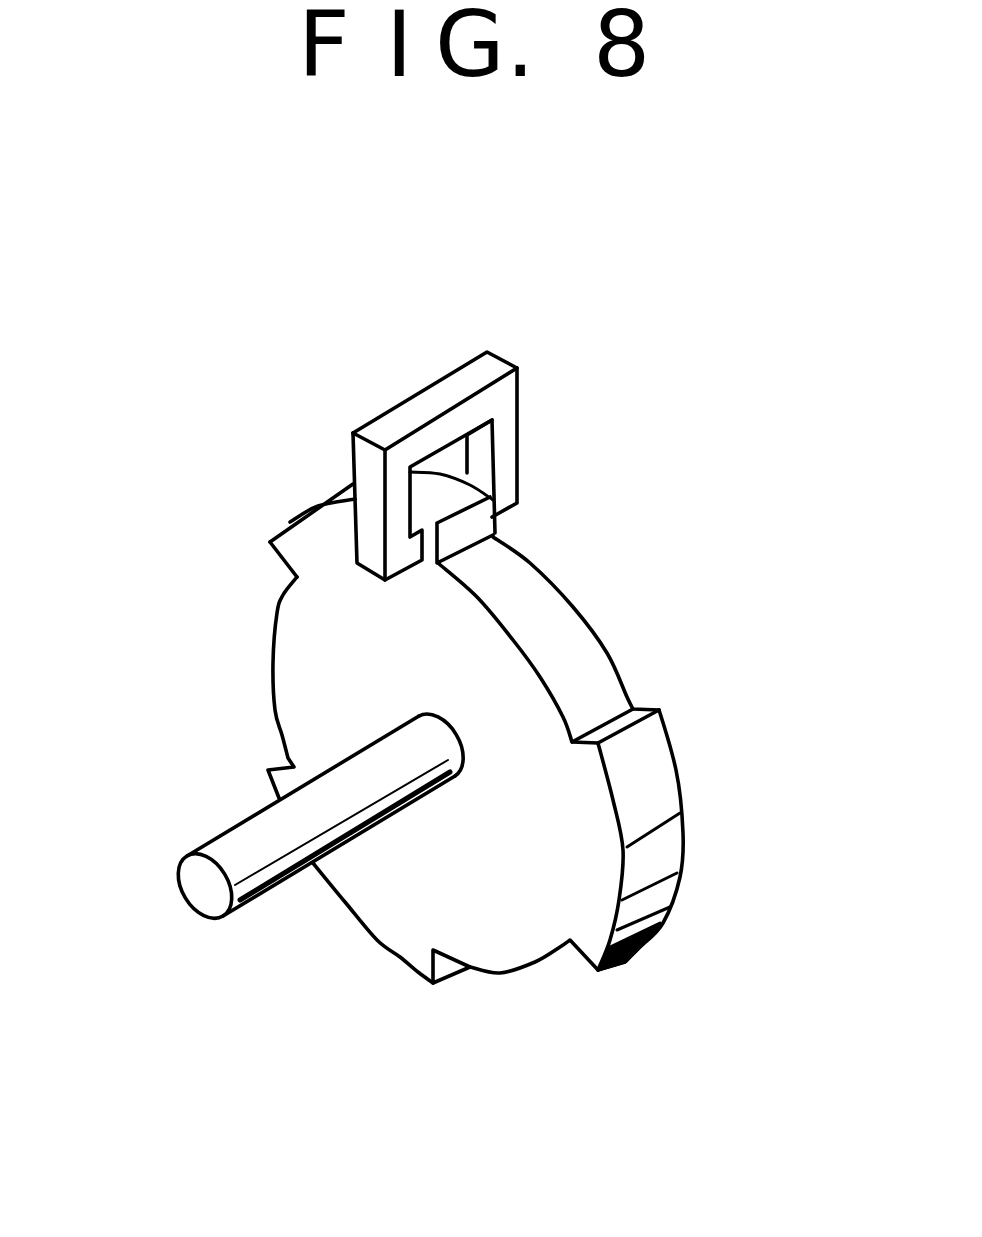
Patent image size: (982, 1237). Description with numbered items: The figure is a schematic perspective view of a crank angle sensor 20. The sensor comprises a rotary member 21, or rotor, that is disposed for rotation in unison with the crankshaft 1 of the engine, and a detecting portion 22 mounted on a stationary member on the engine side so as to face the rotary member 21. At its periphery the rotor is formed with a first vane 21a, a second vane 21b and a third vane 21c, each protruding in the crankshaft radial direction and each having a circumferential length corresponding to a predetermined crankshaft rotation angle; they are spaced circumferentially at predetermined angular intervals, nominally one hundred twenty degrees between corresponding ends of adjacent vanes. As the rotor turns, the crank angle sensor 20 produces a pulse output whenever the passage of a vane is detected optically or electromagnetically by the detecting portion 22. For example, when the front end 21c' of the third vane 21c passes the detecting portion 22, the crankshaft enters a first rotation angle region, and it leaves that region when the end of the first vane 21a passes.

The crankshaft 1 is at (193, 887).
The crank angle sensor 20 is at (640, 460).
The rotary member (rotor) 21 is at (303, 680).
The first vane 21a is at (313, 542).
The second vane 21b is at (400, 932).
The third vane 21c is at (720, 832).
The front end of the third vane 21c' is at (720, 961).
The detecting portion 22 is at (417, 408).